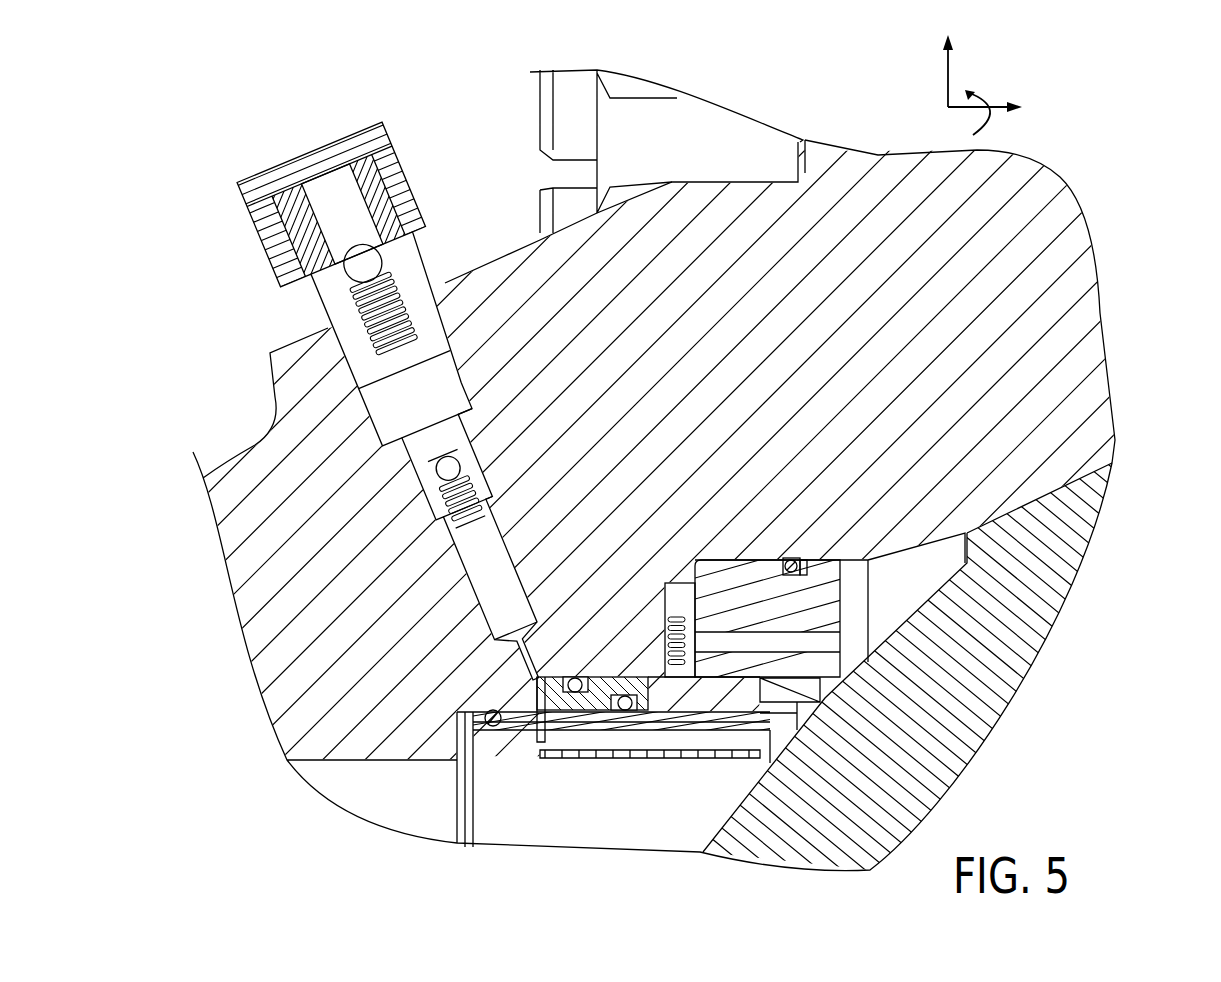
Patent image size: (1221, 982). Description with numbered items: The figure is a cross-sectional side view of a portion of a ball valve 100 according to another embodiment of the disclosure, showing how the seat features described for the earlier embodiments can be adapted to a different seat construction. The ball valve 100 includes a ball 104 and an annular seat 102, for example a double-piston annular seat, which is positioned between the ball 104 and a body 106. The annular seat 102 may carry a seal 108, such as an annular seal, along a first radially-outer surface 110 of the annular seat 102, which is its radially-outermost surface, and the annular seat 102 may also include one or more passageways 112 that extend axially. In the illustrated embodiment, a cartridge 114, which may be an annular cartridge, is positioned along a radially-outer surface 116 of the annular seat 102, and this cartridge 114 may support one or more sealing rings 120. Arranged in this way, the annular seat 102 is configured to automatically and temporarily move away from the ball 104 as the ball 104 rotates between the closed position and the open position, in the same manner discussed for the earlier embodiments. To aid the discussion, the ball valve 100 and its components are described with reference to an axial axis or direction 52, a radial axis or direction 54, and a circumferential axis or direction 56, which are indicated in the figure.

The ball valve 100 is at (160, 145).
The annular seat 102 is at (750, 567).
The ball 104 is at (1058, 552).
The body 106 is at (468, 295).
The seal 108 is at (795, 560).
The first radially-outer surface 110 is at (822, 558).
The passageways 112 is at (800, 638).
The cartridge 114 is at (620, 677).
The radially-outer surface 116 is at (577, 705).
The sealing rings 120 is at (577, 677).
The axial axis 52 is at (977, 105).
The radial axis 54 is at (948, 78).
The circumferential axis 56 is at (988, 127).